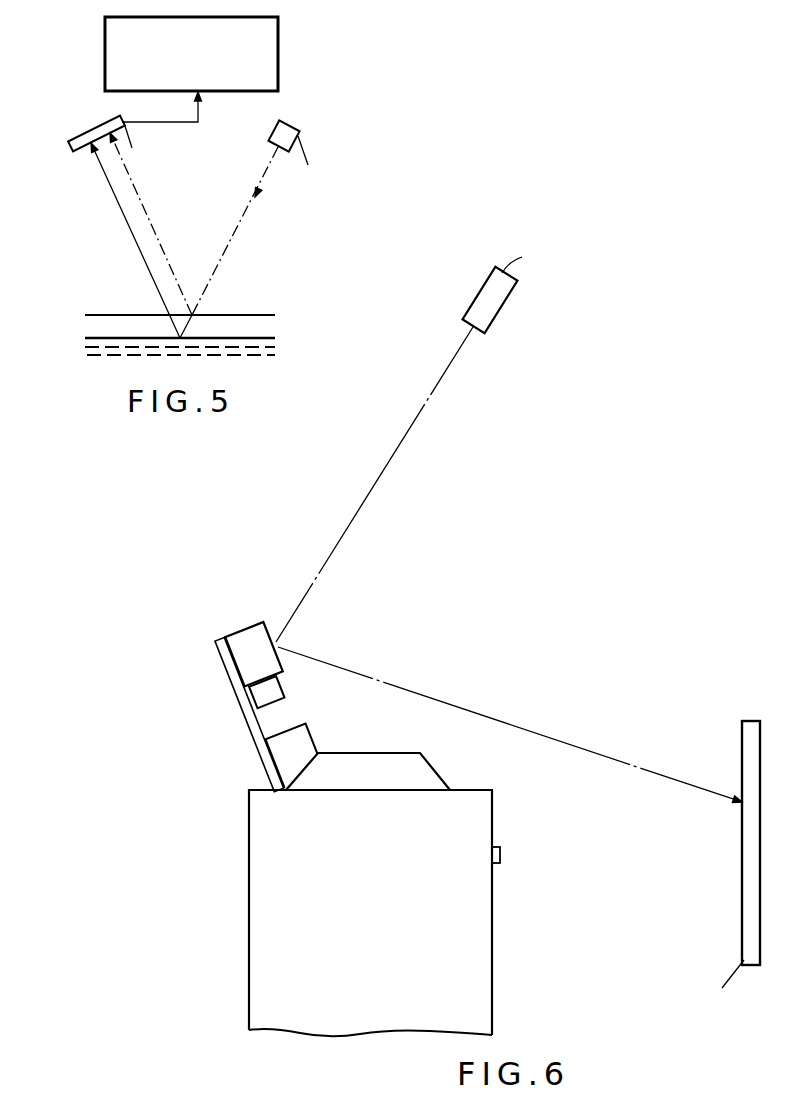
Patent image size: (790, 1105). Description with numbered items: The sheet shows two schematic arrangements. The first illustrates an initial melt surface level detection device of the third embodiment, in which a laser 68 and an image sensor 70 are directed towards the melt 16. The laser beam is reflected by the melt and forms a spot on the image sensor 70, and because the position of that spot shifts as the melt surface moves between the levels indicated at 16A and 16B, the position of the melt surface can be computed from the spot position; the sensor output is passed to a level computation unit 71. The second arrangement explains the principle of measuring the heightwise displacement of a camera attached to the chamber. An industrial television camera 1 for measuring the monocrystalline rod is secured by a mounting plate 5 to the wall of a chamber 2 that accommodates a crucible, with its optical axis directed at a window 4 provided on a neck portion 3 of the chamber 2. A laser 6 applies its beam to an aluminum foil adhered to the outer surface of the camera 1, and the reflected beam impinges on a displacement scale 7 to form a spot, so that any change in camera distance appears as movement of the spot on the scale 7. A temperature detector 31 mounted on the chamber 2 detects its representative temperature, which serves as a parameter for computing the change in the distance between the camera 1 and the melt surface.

In FIG. 5, the level computation unit 71 is at (279, 50).
In FIG. 5, the image sensor 70 is at (90, 127).
In FIG. 5, the laser 68 is at (295, 125).
In FIG. 5, the melt 16 is at (80, 347).
In FIG. 5, the melt surface level 16A is at (275, 338).
In FIG. 5, the melt surface level 16B is at (275, 315).
In FIG. 6, the industrial television camera 1 is at (258, 666).
In FIG. 6, the chamber 2 is at (494, 935).
In FIG. 6, the neck portion 3 is at (436, 771).
In FIG. 6, the window 4 is at (295, 756).
In FIG. 6, the mounting plate 5 is at (249, 714).
In FIG. 6, the laser 6 is at (507, 302).
In FIG. 6, the displacement scale 7 is at (745, 842).
In FIG. 6, the temperature detector 31 is at (502, 855).